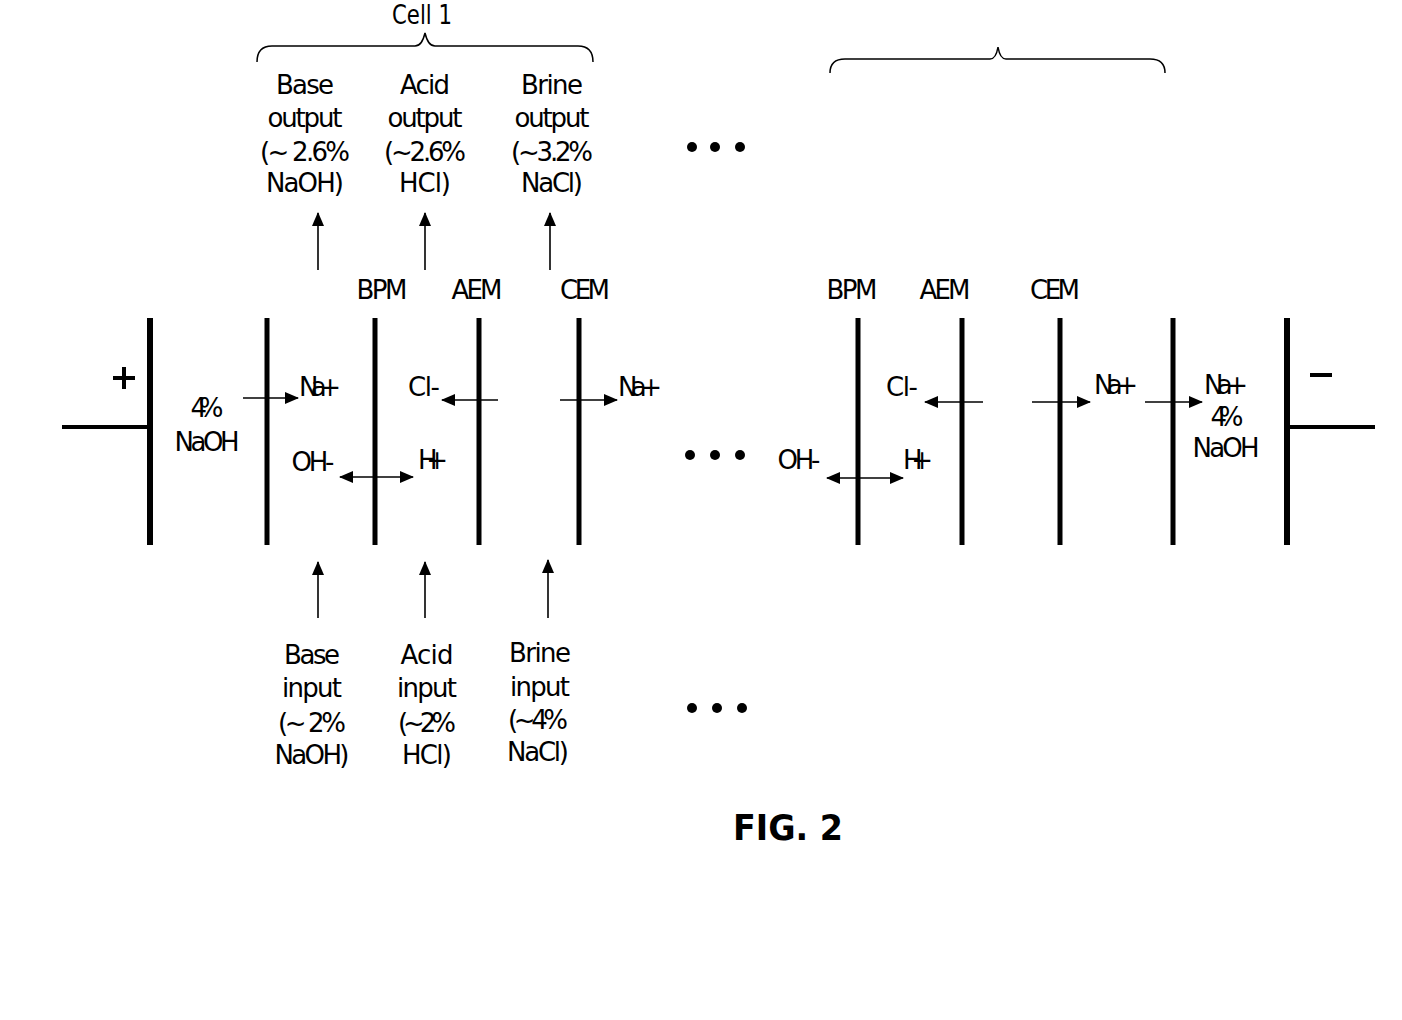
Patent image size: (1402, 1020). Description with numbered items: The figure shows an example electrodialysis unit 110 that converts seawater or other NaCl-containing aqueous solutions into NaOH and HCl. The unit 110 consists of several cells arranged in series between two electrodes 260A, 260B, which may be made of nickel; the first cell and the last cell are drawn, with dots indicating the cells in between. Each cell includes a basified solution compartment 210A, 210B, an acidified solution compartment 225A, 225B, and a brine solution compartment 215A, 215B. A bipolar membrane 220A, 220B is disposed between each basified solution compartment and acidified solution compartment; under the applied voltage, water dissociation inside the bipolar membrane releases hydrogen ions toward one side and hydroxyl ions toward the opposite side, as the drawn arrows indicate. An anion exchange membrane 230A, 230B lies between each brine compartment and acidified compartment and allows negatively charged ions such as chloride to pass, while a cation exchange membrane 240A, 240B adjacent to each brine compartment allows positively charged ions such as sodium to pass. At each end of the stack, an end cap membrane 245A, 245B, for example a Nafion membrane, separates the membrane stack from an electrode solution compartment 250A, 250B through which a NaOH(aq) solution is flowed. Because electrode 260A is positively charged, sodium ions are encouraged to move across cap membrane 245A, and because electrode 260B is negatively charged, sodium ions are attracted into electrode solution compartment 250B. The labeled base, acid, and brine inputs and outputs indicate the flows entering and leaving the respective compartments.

The electrodialysis unit 110 is at (1168, 133).
The basified solution compartment 210A is at (330, 530).
The basified solution compartment 210B is at (833, 522).
The brine solution compartment 215A is at (560, 527).
The brine solution compartment 215B is at (1012, 530).
The bipolar membrane 220A is at (383, 535).
The bipolar membrane 220B is at (862, 528).
The acidified solution compartment 225A is at (452, 527).
The acidified solution compartment 225B is at (933, 533).
The anion exchange membrane 230A is at (483, 360).
The anion exchange membrane 230B is at (967, 360).
The cation exchange membrane 240A is at (585, 360).
The cation exchange membrane 240B is at (1063, 360).
The end cap membrane 245A is at (263, 533).
The end cap membrane 245B is at (1178, 527).
The electrode solution compartment 250A is at (202, 528).
The electrode solution compartment 250B is at (1263, 535).
The electrode 260A is at (150, 338).
The electrode 260B is at (1290, 360).